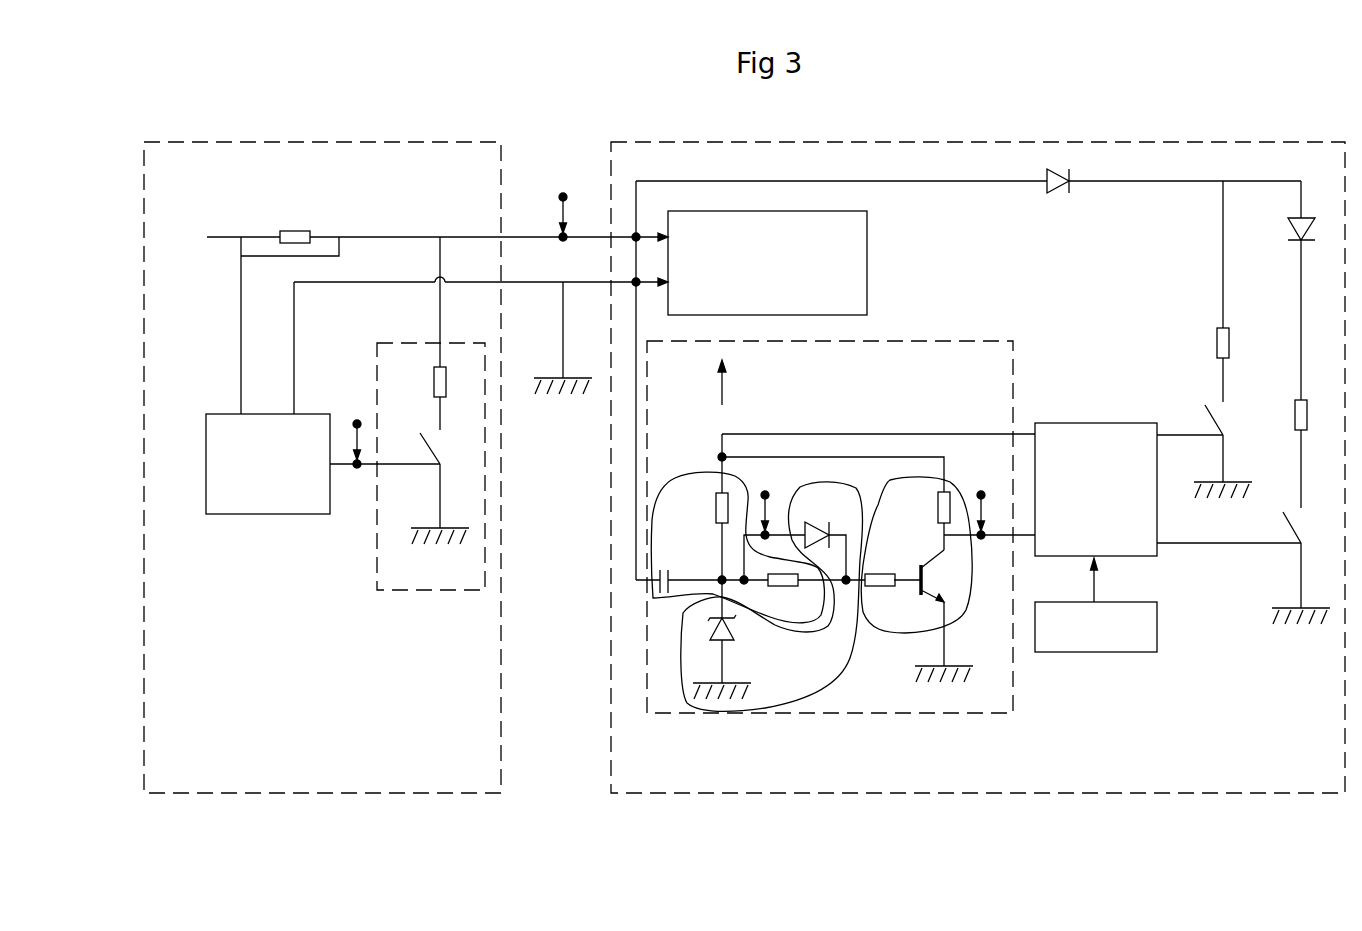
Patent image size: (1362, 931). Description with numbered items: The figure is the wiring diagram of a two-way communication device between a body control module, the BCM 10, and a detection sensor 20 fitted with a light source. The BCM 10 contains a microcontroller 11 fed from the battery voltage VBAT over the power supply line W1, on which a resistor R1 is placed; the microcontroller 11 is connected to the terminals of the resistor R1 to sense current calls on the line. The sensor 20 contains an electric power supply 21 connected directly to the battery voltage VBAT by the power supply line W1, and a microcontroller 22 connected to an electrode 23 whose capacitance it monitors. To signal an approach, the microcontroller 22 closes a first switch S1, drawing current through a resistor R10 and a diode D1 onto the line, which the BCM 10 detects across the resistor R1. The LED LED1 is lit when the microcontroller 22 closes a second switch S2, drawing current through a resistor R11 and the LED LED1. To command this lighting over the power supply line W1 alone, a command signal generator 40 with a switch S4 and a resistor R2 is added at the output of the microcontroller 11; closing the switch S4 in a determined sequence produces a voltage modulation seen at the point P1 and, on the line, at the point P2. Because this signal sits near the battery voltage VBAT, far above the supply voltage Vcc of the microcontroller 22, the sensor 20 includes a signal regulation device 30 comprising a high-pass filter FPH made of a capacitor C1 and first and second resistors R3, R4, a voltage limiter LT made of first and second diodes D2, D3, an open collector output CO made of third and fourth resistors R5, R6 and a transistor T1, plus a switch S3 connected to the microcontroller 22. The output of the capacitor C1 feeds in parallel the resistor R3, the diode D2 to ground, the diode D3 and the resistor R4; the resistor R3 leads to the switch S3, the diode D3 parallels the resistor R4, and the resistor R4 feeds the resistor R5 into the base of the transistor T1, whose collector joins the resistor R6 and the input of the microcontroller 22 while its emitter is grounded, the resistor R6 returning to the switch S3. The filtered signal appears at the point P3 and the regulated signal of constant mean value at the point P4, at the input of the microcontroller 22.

The BCM 10 is at (196, 776).
The microcontroller 11 is at (283, 476).
The detection sensor 20 is at (661, 772).
The electric power supply 21 is at (752, 270).
The microcontroller 22 is at (1079, 482).
The electrode 23 is at (1078, 636).
The signal regulation device 30 is at (1002, 372).
The command signal generator 40 is at (419, 584).
The resistor R1 is at (295, 225).
The resistor R2 is at (421, 376).
The first resistor R3 is at (705, 555).
The second resistor R4 is at (784, 600).
The third resistor R5 is at (883, 600).
The fourth resistor R6 is at (836, 503).
The resistor R10 is at (1195, 291).
The resistor R11 is at (1281, 454).
The capacitor C1 is at (679, 569).
The diode D1 is at (968, 198).
The first diode D2 is at (731, 657).
The second diode D3 is at (796, 537).
The LED LED1 is at (1277, 290).
The transistor T1 is at (944, 616).
The first switch S1 is at (1204, 449).
The second switch S2 is at (1243, 565).
The switch S3 is at (876, 449).
The switch S4 is at (402, 487).
The point P1 is at (358, 433).
The point P2 is at (562, 203).
The point P3 is at (765, 504).
The point P4 is at (989, 504).
The power supply line W1 is at (228, 236).
The battery voltage VBAT is at (408, 380).
The supply voltage Vcc is at (703, 381).
The high-pass filter FPH is at (662, 478).
The voltage limiter LT is at (683, 666).
The open collector output CO is at (962, 618).